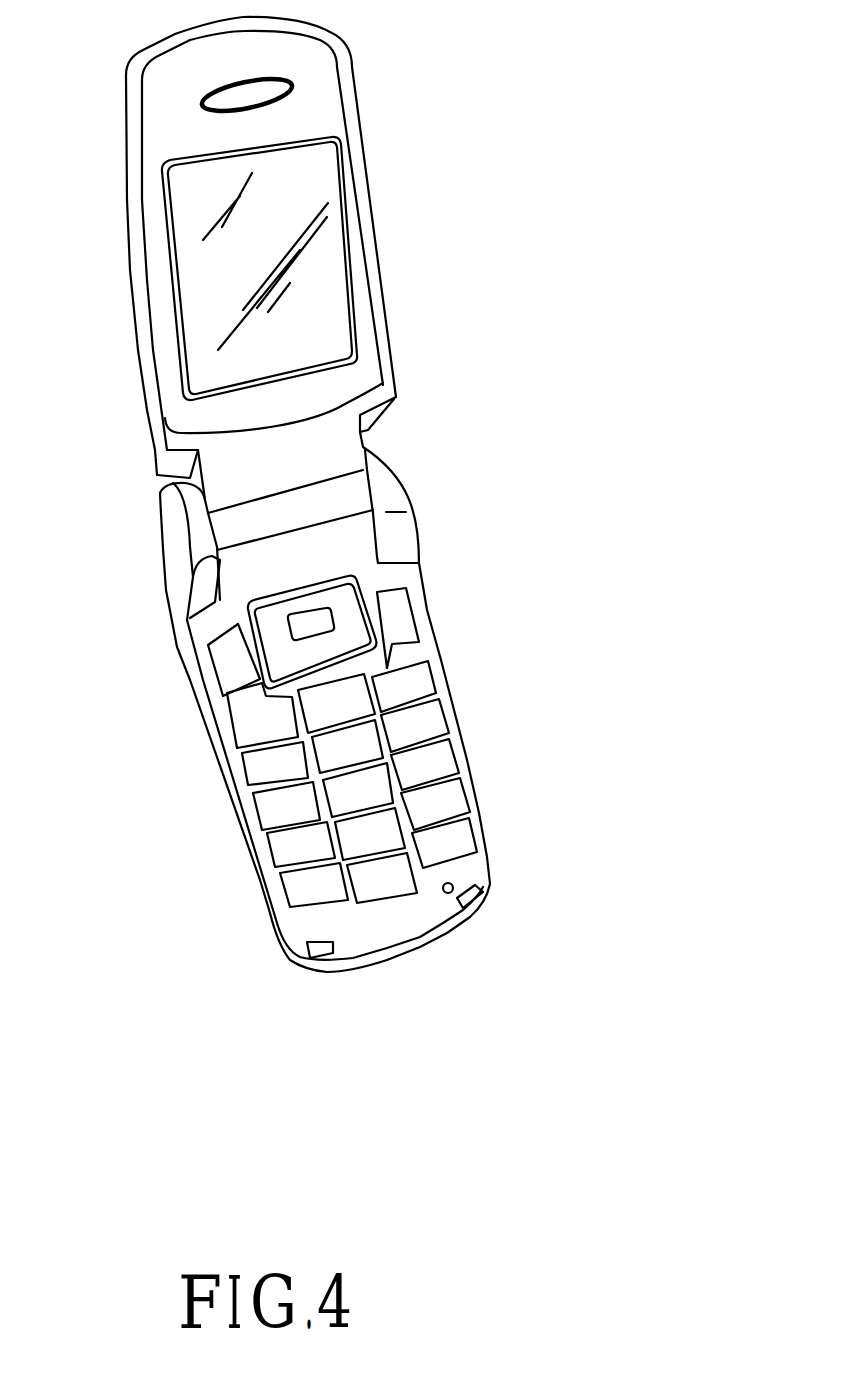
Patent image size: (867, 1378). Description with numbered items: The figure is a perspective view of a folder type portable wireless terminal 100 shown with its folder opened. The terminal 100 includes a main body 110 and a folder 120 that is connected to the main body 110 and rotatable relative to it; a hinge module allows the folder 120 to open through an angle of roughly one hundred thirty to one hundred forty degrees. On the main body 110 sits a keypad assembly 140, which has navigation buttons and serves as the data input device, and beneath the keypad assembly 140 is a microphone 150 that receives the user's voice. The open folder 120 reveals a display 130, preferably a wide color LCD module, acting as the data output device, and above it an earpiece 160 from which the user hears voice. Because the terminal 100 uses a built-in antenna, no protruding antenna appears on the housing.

The folder type portable wireless terminal 100 is at (414, 195).
The main body 110 is at (377, 923).
The folder 120 is at (176, 302).
The display 130 is at (313, 312).
The keypad assembly 140 is at (242, 908).
The microphone 150 is at (475, 886).
The earpiece 160 is at (295, 89).